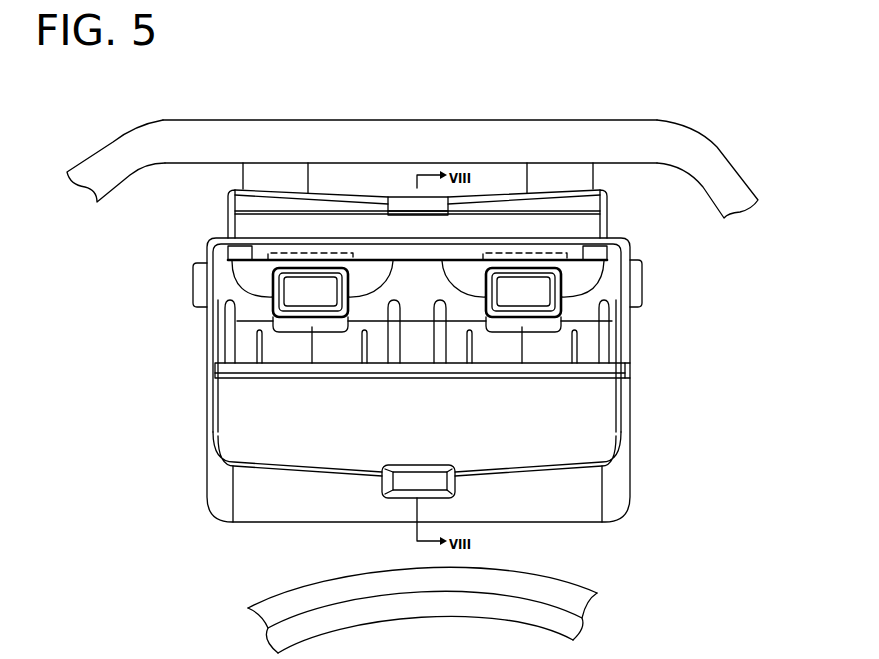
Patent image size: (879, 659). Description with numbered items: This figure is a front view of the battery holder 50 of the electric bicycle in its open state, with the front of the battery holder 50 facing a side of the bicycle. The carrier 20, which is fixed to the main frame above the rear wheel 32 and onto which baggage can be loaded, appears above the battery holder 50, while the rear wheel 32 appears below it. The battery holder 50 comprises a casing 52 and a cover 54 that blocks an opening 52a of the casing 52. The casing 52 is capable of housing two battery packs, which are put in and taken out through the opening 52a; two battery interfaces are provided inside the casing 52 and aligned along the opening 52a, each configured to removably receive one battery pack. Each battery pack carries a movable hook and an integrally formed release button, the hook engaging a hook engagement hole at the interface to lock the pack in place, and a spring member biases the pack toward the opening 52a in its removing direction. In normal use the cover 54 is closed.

The carrier 20 is at (490, 128).
The rear wheel 32 is at (563, 586).
The battery holder 50 is at (208, 192).
The casing 52 is at (213, 243).
The opening 52a is at (216, 310).
The cover 54 is at (206, 470).